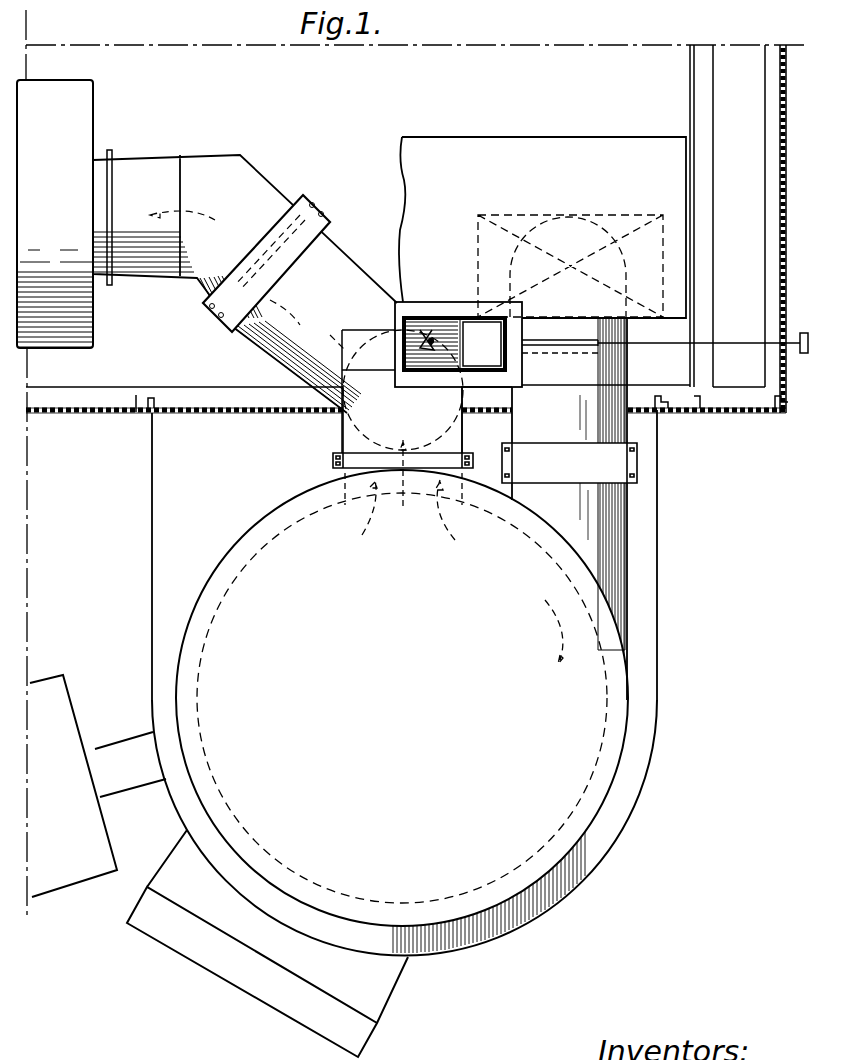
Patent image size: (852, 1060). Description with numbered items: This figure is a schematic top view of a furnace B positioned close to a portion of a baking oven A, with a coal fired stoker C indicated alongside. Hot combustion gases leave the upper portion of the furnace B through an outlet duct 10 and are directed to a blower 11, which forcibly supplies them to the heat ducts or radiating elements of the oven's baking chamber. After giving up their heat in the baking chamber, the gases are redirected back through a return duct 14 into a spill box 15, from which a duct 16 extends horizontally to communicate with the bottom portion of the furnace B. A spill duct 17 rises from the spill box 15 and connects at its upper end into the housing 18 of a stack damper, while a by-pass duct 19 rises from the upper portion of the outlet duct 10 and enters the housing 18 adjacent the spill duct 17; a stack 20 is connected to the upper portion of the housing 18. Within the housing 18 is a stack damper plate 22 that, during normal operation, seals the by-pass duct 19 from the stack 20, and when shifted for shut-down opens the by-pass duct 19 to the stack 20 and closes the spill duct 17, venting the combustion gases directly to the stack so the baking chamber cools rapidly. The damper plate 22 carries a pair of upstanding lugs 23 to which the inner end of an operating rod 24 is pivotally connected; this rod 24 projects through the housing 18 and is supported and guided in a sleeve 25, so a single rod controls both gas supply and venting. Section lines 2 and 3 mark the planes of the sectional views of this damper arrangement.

The outlet duct 10 is at (343, 263).
The blower 11 is at (80, 127).
The return duct 14 is at (598, 150).
The spill box 15 is at (604, 216).
The duct 16 is at (615, 517).
The spill duct 17 is at (562, 360).
The stack damper housing 18 is at (408, 305).
The by-pass duct 19 is at (376, 330).
The stack 20 is at (432, 318).
The stack damper plate 22 is at (428, 372).
The upstanding lugs 23 is at (462, 322).
The operating rod 24 is at (640, 348).
The sleeve 25 is at (582, 348).
The section line 2 is at (795, 412).
The section line 3 is at (657, 952).
The baking oven A is at (135, 413).
The furnace B is at (560, 845).
The coal fired stoker C is at (65, 725).